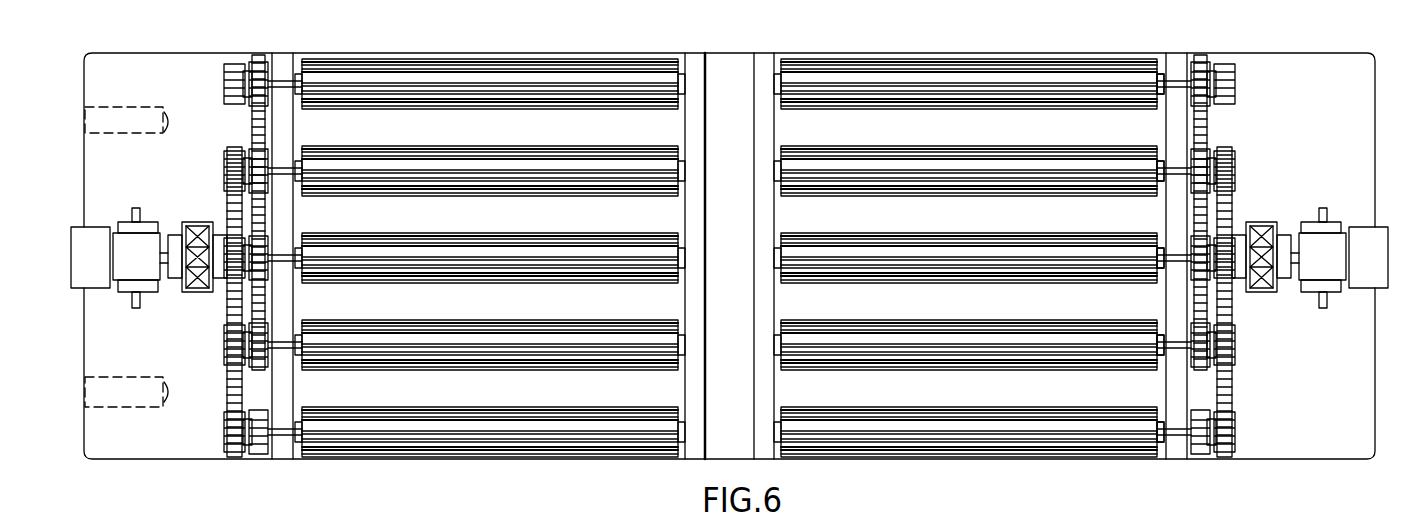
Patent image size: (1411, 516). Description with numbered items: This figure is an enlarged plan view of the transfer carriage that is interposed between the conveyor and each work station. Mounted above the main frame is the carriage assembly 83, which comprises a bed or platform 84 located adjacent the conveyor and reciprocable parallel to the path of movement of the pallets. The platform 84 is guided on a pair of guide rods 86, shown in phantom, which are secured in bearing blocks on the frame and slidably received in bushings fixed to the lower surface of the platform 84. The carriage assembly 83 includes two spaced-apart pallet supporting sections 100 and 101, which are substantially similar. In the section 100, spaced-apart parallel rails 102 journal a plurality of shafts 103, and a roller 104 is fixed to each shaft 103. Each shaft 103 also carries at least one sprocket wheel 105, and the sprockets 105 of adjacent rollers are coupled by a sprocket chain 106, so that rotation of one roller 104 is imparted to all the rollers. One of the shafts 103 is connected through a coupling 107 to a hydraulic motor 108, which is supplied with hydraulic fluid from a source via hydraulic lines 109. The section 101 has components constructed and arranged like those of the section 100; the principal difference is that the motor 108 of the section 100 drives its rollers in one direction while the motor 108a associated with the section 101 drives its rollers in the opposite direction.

The carriage assembly 83 is at (1296, 49).
The bed or platform 84 is at (1247, 66).
The guide rods 86 is at (138, 134).
The pallet supporting section 100 is at (493, 282).
The pallet supporting section 101 is at (984, 470).
The rails 102 is at (287, 453).
The shafts 103 is at (682, 405).
The roller 104 is at (491, 266).
The sprocket wheel 105 is at (266, 166).
The sprocket chain 106 is at (252, 123).
The coupling 107 is at (177, 225).
The hydraulic motor 108 is at (147, 269).
The hydraulic motor 108a is at (1317, 267).
The hydraulic lines 109 is at (135, 297).